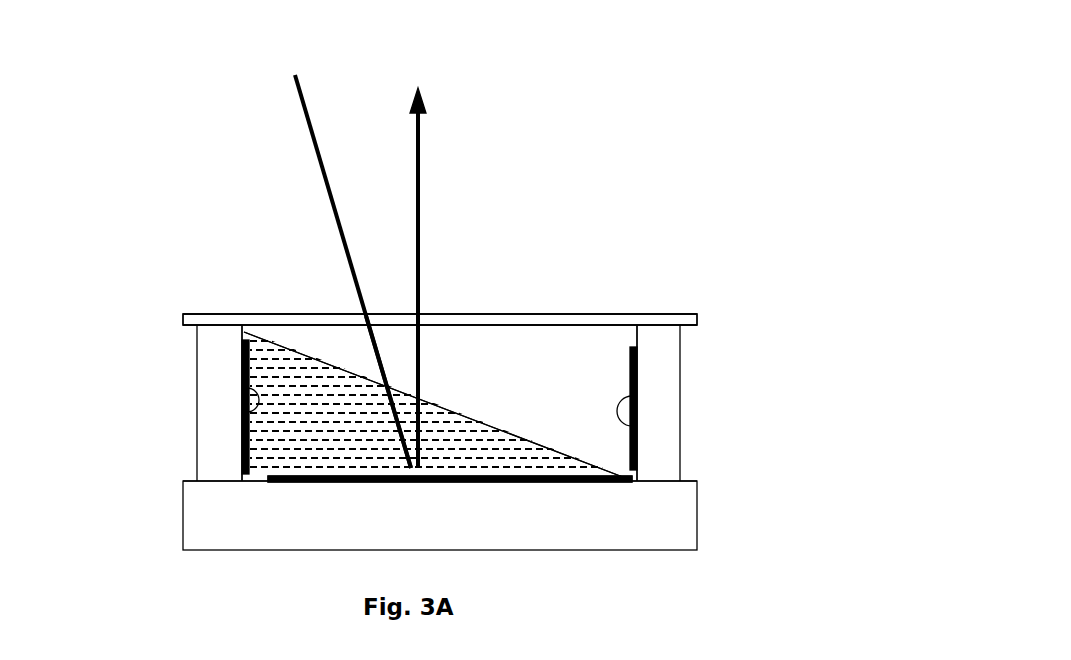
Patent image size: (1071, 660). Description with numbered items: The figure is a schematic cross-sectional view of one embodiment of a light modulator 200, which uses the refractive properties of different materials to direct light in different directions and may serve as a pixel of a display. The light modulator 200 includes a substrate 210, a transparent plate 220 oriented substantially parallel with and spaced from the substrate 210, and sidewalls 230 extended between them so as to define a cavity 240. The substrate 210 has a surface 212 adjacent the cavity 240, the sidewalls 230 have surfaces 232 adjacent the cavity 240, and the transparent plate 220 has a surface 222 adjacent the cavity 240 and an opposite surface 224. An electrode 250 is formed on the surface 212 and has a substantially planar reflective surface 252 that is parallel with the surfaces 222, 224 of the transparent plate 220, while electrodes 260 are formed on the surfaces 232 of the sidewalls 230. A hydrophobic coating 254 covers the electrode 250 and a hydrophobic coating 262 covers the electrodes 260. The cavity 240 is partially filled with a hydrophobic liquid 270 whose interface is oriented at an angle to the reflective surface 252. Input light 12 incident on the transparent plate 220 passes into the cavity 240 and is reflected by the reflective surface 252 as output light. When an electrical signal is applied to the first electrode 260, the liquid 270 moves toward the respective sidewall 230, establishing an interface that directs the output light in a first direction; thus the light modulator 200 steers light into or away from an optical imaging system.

The light modulator 200 is at (636, 113).
The substrate 210 is at (680, 520).
The surface of substrate 212 is at (615, 476).
The transparent plate 220 is at (692, 315).
The surface of transparent plate 222 is at (550, 327).
The surface opposite surface 222 224 is at (498, 314).
The sidewalls 230 is at (670, 420).
The surfaces of sidewalls 232 is at (245, 330).
The cavity 240 is at (526, 368).
The electrode 250 is at (457, 476).
The reflective surface 252 is at (505, 476).
The hydrophobic coating 254 is at (257, 473).
The electrodes 260 is at (630, 372).
The hydrophobic coating 262 is at (240, 383).
The liquid 270 is at (253, 437).
The input light 12 is at (303, 105).